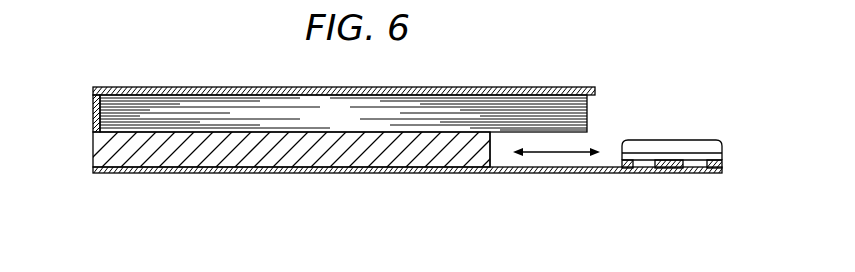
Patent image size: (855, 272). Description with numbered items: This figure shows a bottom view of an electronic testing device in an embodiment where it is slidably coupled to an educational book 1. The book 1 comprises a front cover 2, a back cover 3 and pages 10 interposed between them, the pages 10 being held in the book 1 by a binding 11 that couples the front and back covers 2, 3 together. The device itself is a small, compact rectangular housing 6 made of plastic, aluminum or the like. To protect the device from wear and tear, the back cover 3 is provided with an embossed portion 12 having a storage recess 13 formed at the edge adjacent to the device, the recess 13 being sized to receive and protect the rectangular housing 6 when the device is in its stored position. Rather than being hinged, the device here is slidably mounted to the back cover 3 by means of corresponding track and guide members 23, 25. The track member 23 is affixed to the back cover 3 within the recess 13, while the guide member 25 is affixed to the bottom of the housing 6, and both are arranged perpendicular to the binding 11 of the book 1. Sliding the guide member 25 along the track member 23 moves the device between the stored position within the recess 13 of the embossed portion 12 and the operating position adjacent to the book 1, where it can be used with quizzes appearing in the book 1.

The educational book 1 is at (489, 80).
The front cover 2 is at (228, 82).
The back cover 3 is at (231, 178).
The rectangular housing 6 is at (707, 147).
The pages 10 is at (395, 112).
The binding 11 is at (93, 122).
The embossed portion 12 is at (350, 160).
The storage recess 13 is at (499, 158).
The track member 23 is at (603, 175).
The guide member 25 is at (722, 168).